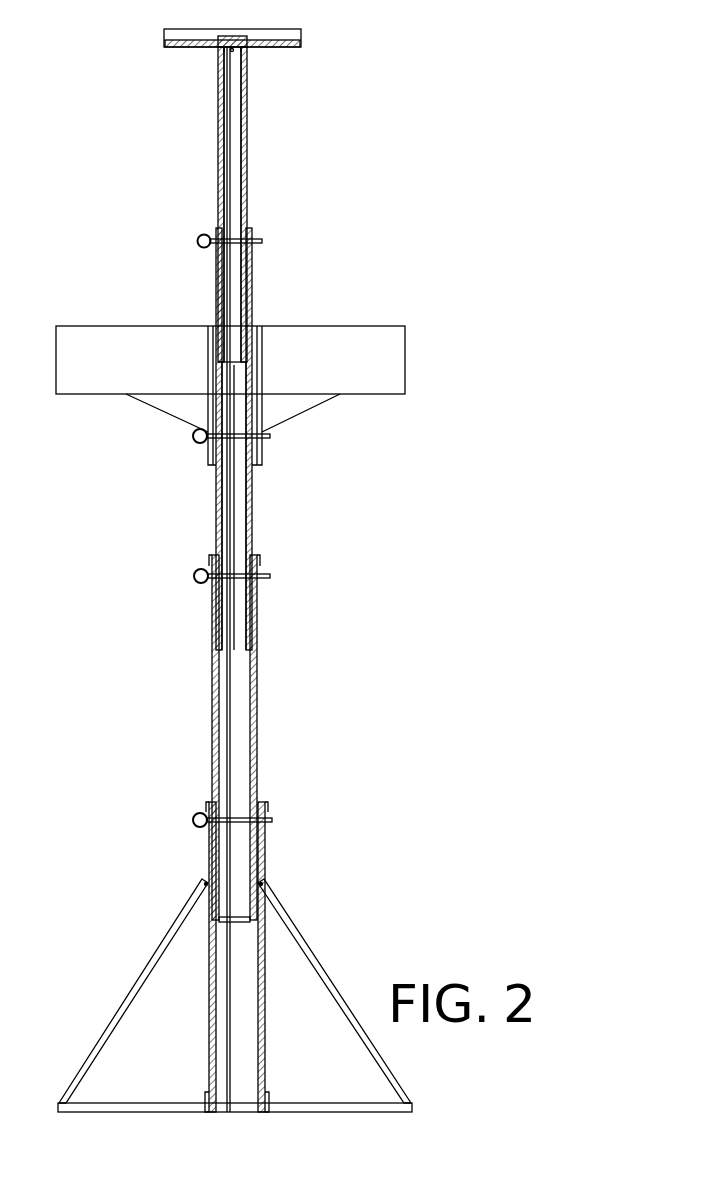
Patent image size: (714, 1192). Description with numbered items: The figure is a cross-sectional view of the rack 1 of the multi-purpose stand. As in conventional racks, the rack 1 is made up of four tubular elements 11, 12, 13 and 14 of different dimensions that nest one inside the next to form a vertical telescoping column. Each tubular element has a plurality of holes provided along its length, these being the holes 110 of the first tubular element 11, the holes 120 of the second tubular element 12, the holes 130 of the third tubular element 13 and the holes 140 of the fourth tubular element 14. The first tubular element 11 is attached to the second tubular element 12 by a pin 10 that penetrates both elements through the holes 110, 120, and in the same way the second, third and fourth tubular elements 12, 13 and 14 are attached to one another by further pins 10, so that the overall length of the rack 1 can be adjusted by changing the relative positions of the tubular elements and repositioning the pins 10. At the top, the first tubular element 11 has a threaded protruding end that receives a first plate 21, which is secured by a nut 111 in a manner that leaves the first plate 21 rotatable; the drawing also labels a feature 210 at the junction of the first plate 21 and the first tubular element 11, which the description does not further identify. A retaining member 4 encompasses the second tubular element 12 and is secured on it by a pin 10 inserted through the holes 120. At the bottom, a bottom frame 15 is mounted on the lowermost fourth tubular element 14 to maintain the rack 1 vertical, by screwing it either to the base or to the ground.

The rack 1 is at (292, 178).
The retaining member 4 is at (343, 342).
The pin 10 is at (257, 243).
The first tubular element 11 is at (218, 127).
The second tubular element 12 is at (252, 301).
The third tubular element 13 is at (258, 637).
The fourth tubular element 14 is at (263, 848).
The bottom frame 15 is at (316, 966).
The first plate 21 is at (302, 36).
The holes of first tubular element 110 is at (289, 139).
The nut 111 is at (238, 36).
The holes of second tubular element 120 is at (216, 296).
The holes of third tubular element 130 is at (256, 605).
The holes of fourth tubular element 140 is at (305, 817).
The joint 210 is at (228, 50).